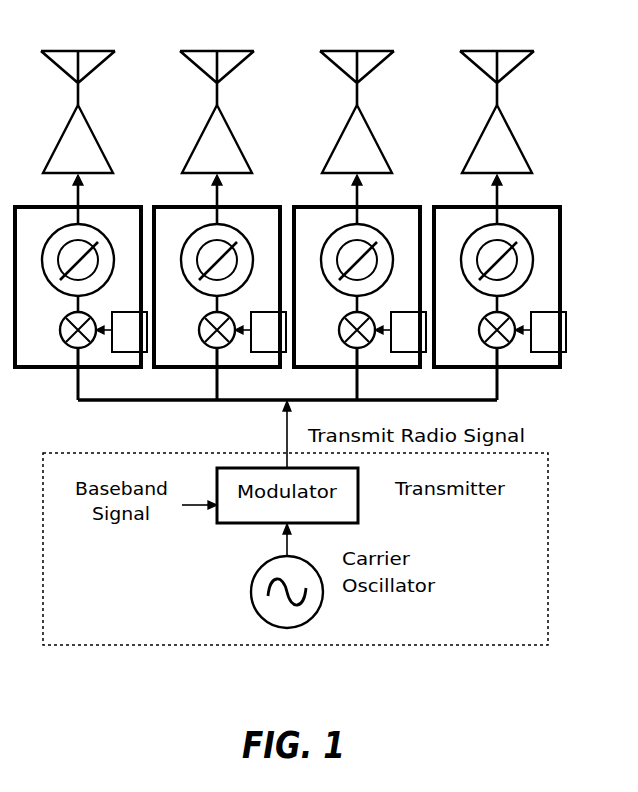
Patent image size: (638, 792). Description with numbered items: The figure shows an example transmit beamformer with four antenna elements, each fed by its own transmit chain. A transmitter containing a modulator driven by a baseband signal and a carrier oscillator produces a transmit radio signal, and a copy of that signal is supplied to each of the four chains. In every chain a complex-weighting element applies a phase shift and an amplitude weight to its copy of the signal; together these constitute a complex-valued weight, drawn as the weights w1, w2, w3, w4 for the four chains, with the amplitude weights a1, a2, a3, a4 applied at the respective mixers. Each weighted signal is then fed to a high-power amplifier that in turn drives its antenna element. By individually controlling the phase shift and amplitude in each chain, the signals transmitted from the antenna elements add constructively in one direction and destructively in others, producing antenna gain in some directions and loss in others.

The complex-valued weight w1 is at (81, 225).
The complex-valued weight w2 is at (220, 225).
The complex-valued weight w3 is at (360, 225).
The complex-valued weight w4 is at (500, 225).
The amplitude weight a1 is at (121, 332).
The amplitude weight a2 is at (260, 332).
The amplitude weight a3 is at (400, 332).
The amplitude weight a4 is at (540, 332).